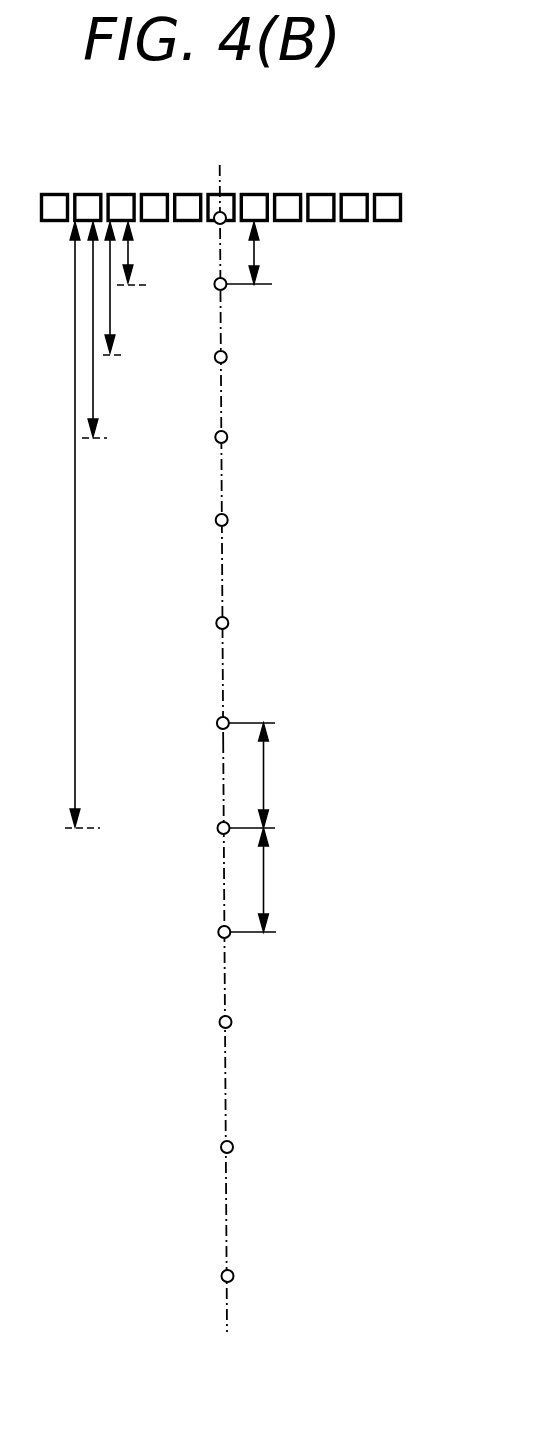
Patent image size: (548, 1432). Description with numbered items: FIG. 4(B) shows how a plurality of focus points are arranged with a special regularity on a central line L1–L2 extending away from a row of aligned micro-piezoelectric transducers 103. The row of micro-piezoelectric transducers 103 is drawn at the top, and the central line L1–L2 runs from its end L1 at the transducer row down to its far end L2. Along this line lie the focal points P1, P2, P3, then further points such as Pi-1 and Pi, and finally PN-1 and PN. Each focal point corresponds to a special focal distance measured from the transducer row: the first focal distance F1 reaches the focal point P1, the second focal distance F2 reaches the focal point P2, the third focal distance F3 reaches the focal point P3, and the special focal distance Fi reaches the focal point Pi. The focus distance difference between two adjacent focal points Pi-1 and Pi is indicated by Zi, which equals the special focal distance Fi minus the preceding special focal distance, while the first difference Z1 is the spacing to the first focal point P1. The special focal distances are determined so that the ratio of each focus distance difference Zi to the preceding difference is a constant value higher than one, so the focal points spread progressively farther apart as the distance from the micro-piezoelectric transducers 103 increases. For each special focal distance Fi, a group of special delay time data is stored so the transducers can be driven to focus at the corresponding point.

The micro-piezoelectric transducer 103 is at (313, 192).
The central line end L1 is at (218, 437).
The central line end L2 is at (226, 1057).
The focal point P1 is at (216, 289).
The focal point P2 is at (217, 362).
The focal point P3 is at (217, 442).
The focal point Pi-1 is at (218, 728).
The focal point Pi is at (218, 833).
The focal point PN-1 is at (222, 1152).
The focal point PN is at (223, 1281).
The focus distance difference Z1 is at (273, 253).
The focus distance difference Zi is at (278, 775).
The special focal distance F1 is at (142, 253).
The special focal distance F2 is at (122, 288).
The special focal distance F3 is at (104, 330).
The special focal distance Fi is at (85, 525).